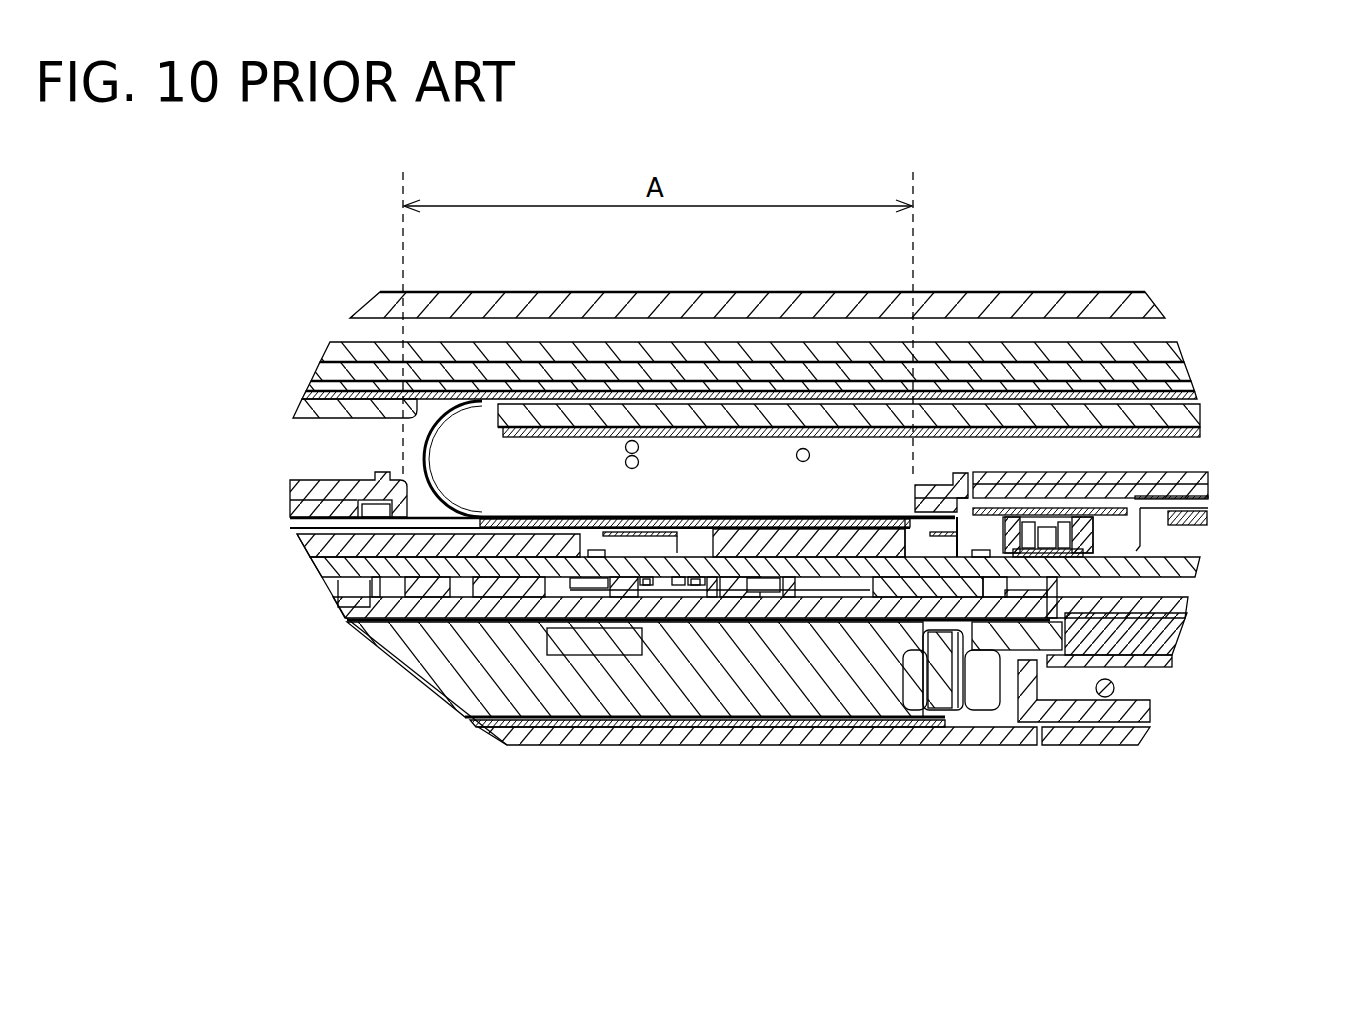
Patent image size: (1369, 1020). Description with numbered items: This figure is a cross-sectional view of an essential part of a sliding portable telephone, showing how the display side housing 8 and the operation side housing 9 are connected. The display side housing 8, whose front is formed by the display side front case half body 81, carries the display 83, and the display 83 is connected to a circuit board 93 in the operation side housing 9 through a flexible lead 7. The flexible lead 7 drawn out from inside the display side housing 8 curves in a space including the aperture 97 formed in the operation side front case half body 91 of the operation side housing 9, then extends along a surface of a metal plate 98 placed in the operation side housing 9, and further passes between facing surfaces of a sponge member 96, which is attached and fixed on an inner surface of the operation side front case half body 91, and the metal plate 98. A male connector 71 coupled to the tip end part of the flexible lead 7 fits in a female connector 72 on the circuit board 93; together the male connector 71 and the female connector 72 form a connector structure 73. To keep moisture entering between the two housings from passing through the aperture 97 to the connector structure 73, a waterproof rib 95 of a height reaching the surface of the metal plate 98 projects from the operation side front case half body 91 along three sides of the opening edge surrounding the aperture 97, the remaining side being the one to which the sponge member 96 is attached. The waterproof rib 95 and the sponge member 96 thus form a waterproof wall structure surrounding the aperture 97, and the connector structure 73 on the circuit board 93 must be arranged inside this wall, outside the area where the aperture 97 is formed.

The flexible lead 7 is at (440, 496).
The display side housing 8 is at (688, 380).
The display side front case half body 81 is at (303, 408).
The display 83 is at (1047, 303).
The operation side housing 9 is at (293, 494).
The operation side front case half body 91 is at (297, 486).
The circuit board 93 is at (1180, 571).
The waterproof rib 95 is at (400, 522).
The sponge member 96 is at (907, 508).
The aperture 97 is at (915, 486).
The metal plate 98 is at (467, 532).
The male connector 71 is at (1050, 513).
The female connector 72 is at (1095, 538).
The connector structure 73 is at (1169, 494).